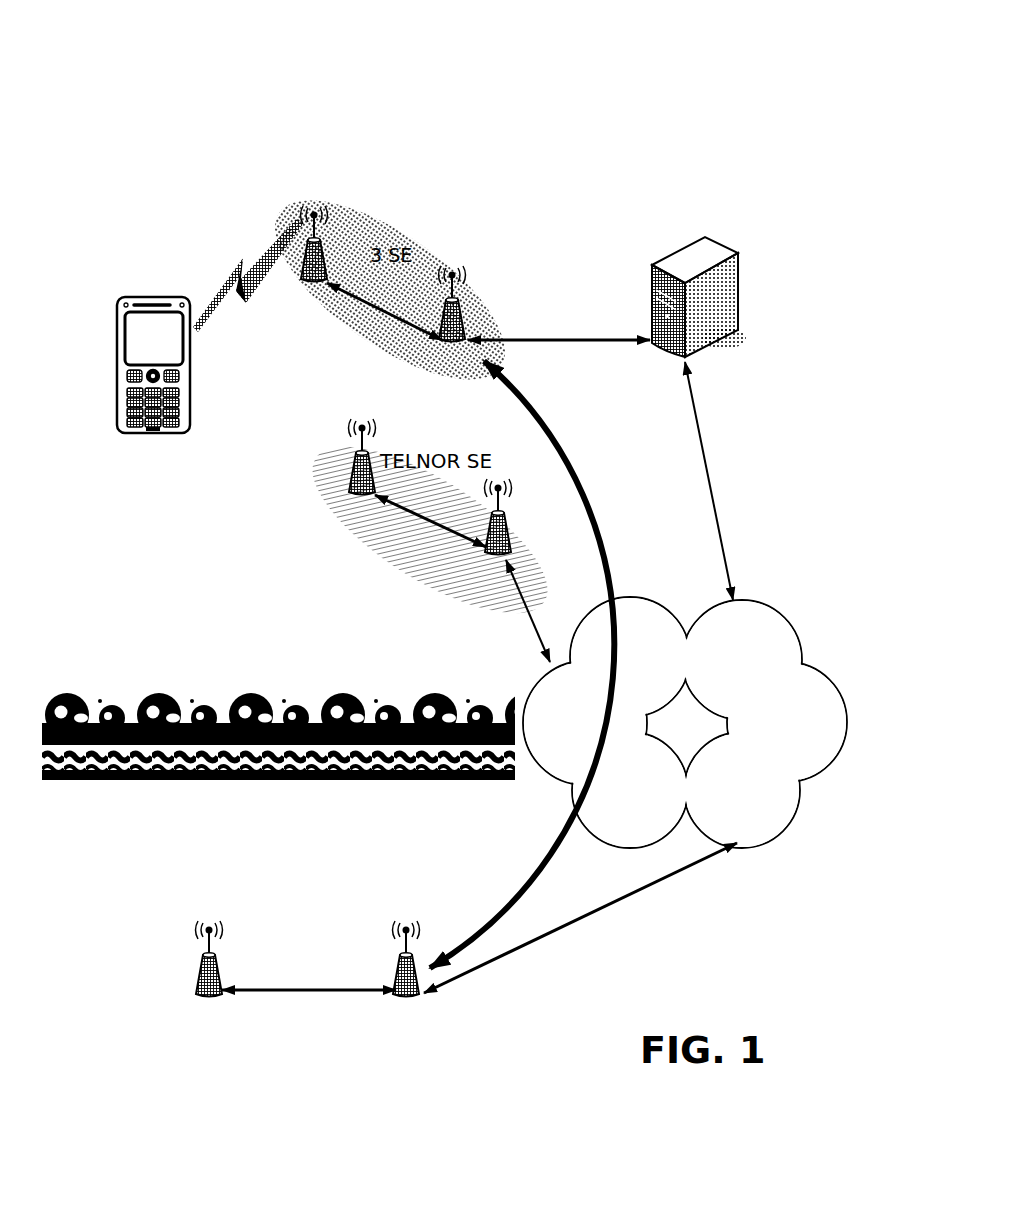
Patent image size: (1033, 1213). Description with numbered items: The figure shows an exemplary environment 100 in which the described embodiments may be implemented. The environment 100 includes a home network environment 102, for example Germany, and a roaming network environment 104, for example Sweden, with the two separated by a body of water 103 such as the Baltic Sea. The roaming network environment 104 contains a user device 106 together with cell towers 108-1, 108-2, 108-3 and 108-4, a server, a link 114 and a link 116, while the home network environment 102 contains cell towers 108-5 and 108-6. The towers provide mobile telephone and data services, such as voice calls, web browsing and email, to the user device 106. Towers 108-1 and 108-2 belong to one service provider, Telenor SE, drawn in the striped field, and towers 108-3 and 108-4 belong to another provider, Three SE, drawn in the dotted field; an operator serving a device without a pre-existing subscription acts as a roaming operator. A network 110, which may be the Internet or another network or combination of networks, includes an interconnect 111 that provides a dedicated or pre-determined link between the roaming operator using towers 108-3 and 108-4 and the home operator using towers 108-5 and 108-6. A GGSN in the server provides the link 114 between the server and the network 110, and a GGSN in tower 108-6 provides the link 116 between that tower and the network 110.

The environment 100 is at (203, 33).
The home network environment 102 is at (147, 849).
The body of water 103 is at (330, 695).
The roaming network environment 104 is at (155, 624).
The user device 106 is at (131, 297).
The cell tower 108-1 is at (348, 418).
The cell tower 108-2 is at (480, 550).
The cell tower 108-3 is at (325, 212).
The cell tower 108-4 is at (463, 268).
The cell tower 108-5 is at (198, 935).
The cell tower 108-6 is at (402, 997).
The network 110 is at (685, 722).
The interconnect 111 is at (582, 522).
The link 114 is at (713, 493).
The link 116 is at (607, 902).